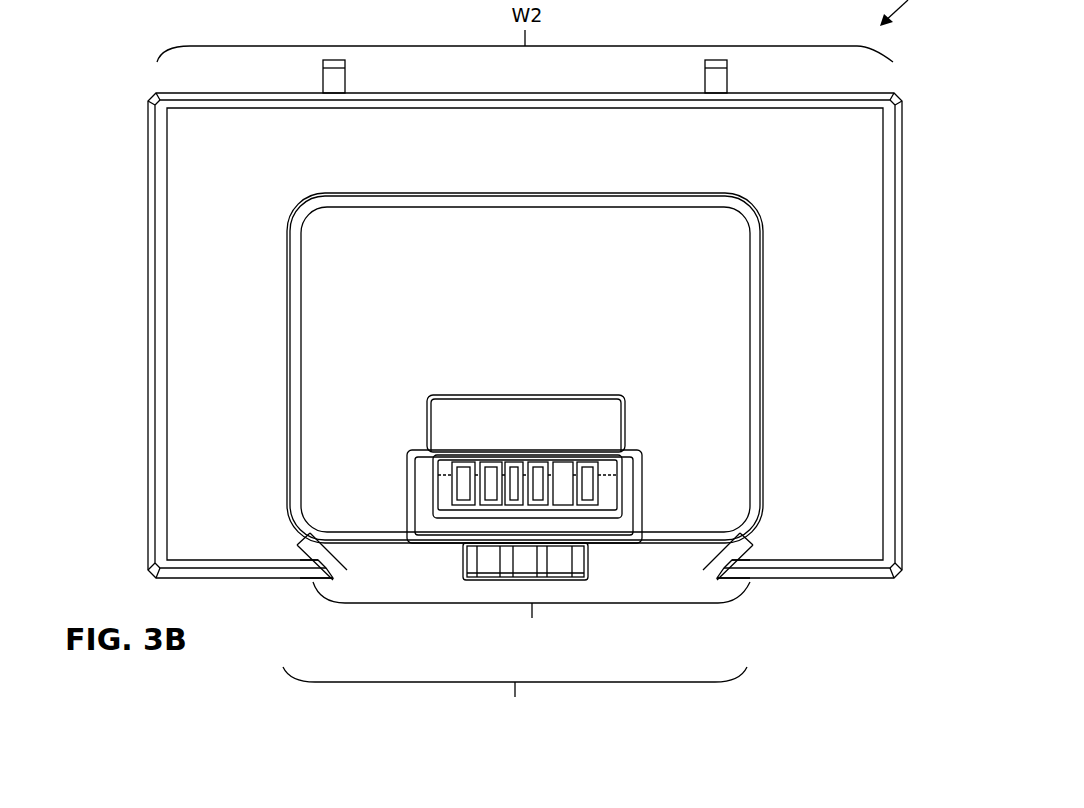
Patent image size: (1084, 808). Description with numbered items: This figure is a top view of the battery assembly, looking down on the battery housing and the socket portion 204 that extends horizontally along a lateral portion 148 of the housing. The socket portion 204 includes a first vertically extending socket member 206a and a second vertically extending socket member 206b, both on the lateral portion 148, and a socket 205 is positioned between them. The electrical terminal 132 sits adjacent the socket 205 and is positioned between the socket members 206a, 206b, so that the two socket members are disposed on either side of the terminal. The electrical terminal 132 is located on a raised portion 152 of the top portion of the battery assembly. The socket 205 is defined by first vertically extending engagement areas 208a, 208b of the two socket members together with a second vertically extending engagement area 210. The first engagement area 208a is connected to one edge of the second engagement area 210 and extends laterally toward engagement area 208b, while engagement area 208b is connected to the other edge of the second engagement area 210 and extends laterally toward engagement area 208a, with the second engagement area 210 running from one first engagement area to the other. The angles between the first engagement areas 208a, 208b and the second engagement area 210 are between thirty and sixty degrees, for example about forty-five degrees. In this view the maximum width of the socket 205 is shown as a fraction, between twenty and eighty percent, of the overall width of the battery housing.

The lateral portion 148 is at (140, 504).
The raised portion 152 is at (484, 303).
The electrical terminal 132 is at (548, 440).
The second vertically extending engagement area 210 is at (388, 545).
The first vertically extending engagement area 208a is at (320, 553).
The first vertically extending engagement area 208b is at (730, 550).
The first vertically extending socket member 206a is at (317, 578).
The second vertically extending socket member 206b is at (740, 578).
The socket 205 is at (381, 578).
The socket portion 204 is at (515, 698).